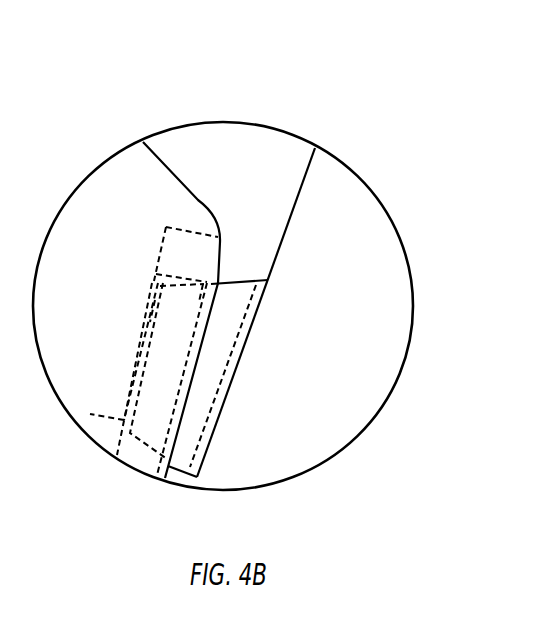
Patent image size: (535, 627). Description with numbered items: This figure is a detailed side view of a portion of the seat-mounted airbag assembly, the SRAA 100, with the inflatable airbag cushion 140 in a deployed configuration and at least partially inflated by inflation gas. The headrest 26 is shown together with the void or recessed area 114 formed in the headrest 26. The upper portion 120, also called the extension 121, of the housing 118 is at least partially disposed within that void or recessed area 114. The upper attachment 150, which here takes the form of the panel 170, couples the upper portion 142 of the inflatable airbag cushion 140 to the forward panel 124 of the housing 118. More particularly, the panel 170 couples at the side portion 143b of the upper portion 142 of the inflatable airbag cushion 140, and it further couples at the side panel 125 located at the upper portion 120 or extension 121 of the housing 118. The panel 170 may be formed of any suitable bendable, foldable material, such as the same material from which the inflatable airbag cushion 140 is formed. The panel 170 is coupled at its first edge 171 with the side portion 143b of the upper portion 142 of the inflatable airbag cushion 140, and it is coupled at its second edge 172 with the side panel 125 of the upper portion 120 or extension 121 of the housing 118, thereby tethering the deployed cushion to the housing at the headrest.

The SRAA 100 is at (136, 129).
The headrest 26 is at (165, 206).
The void or recessed area 114 is at (198, 230).
The panel 170 is at (233, 278).
The second edge 172 is at (154, 282).
The side panel 125 is at (143, 312).
The forward panel 124 is at (140, 320).
The housing 118 is at (142, 333).
The extension 121 is at (133, 357).
The upper portion 120 is at (130, 378).
The upper attachment 150 is at (247, 310).
The first edge 171 is at (243, 347).
The side portion 143b is at (243, 368).
The upper portion 142 is at (333, 406).
The inflatable airbag cushion 140 is at (297, 446).